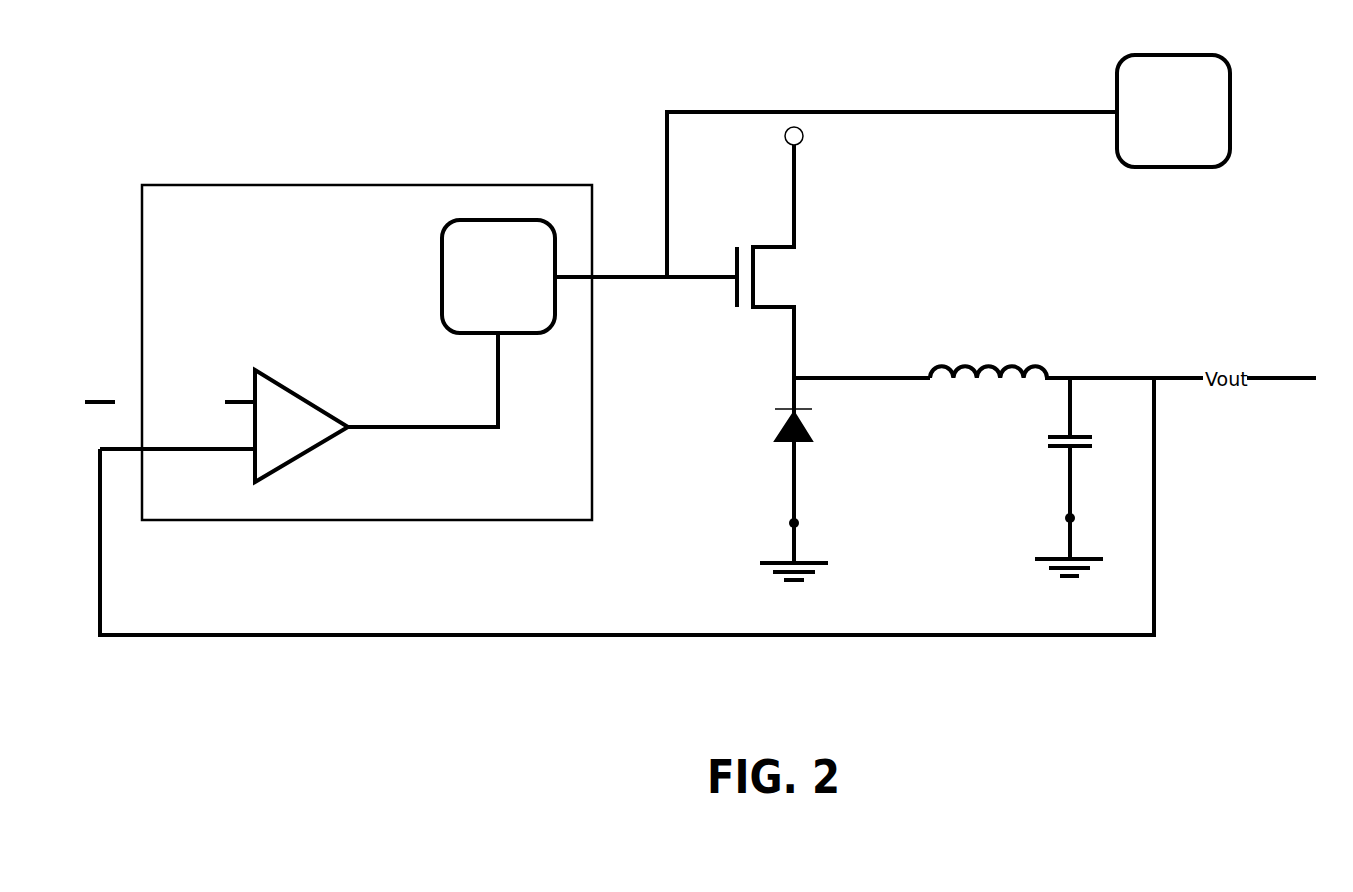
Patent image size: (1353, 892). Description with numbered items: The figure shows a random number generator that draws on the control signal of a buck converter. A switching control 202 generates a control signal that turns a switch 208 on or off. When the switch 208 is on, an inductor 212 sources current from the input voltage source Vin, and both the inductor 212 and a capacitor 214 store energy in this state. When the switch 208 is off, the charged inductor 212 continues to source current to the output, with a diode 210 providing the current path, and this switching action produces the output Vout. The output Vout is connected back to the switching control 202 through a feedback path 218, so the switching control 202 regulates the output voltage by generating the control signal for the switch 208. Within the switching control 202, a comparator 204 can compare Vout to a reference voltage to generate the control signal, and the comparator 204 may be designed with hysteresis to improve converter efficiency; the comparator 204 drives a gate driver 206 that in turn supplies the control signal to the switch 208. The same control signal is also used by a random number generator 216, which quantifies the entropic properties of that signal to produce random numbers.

The switching control 202 is at (332, 185).
The comparator 204 is at (300, 388).
The gate driver 206 is at (502, 222).
The switch 208 is at (794, 277).
The diode 210 is at (808, 425).
The inductor 212 is at (990, 372).
The capacitor 214 is at (1072, 434).
The random number generator 216 is at (1197, 60).
The feedback path 218 is at (878, 635).